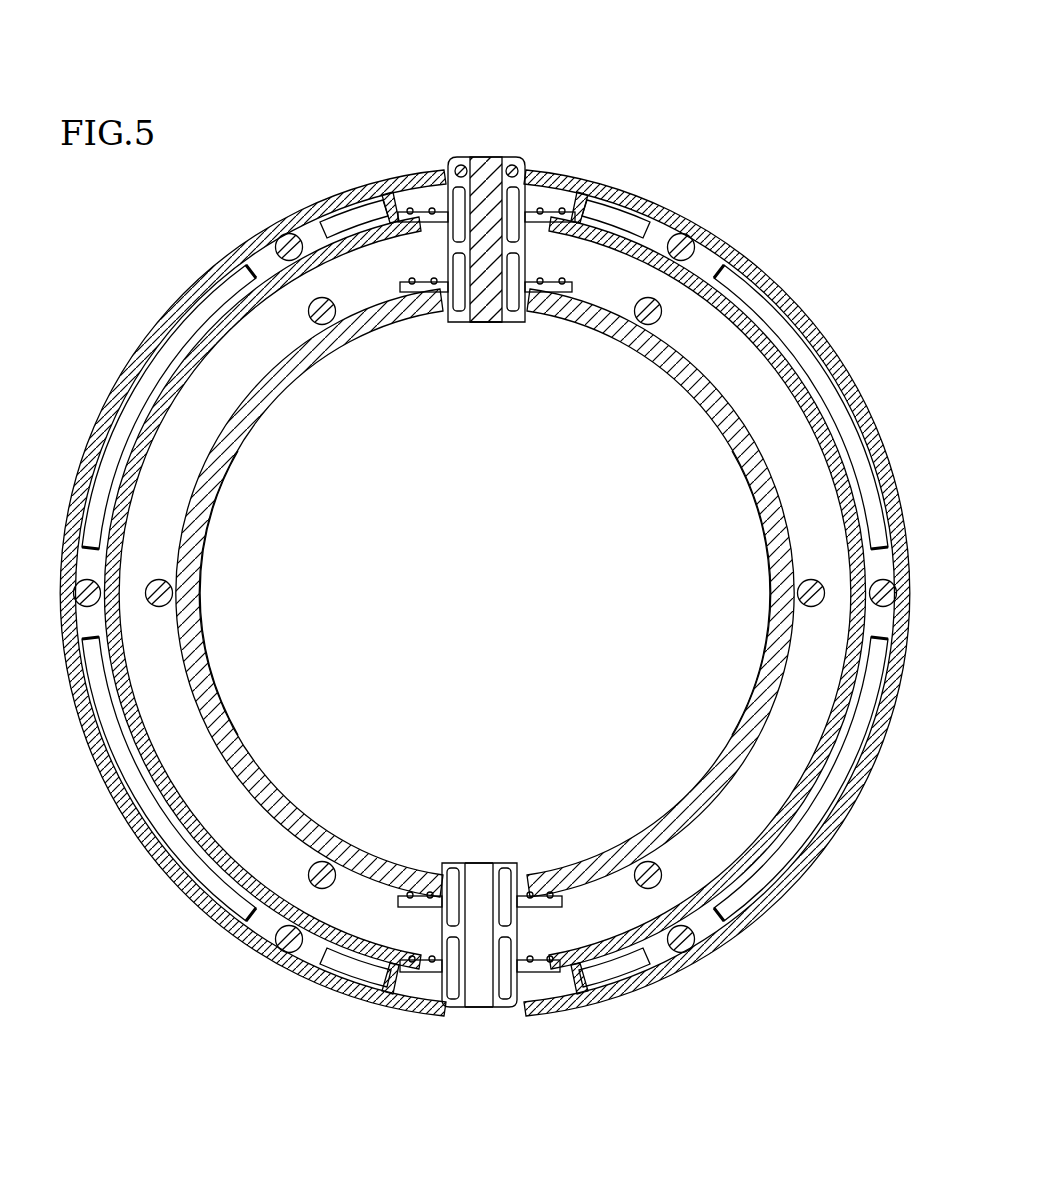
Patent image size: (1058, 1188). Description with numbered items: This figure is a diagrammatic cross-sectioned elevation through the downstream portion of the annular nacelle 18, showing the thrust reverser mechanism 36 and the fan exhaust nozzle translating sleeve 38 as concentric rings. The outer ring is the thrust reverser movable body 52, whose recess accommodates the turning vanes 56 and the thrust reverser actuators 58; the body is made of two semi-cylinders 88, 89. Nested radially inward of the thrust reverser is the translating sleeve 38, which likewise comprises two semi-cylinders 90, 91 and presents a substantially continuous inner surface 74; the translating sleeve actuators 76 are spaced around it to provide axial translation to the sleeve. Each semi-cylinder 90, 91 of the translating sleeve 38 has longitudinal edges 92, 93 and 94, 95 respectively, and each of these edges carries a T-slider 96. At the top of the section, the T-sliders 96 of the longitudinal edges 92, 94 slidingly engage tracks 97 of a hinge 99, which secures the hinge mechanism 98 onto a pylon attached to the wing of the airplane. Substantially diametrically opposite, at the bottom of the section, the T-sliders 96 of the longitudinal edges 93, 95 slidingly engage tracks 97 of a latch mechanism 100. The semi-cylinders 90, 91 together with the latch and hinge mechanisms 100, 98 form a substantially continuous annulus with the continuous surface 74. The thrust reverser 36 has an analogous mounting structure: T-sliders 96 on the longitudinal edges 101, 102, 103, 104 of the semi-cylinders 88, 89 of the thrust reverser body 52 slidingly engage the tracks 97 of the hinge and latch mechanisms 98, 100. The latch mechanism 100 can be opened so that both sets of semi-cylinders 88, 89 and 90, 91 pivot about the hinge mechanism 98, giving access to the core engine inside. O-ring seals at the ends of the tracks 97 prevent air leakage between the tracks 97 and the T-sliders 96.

The annular nacelle 18 is at (471, 597).
The thrust reverser mechanism 36 is at (493, 593).
The fan exhaust nozzle translating sleeve 38 is at (485, 593).
The thrust reverser movable body 52 is at (833, 363).
The turning vanes 56 is at (155, 372).
The thrust reverser actuators 58 is at (684, 246).
The inner surface 74 is at (733, 447).
The translating sleeve actuators 76 is at (318, 313).
The semi-cylinder 88 is at (313, 945).
The semi-cylinder 89 is at (655, 945).
The semi-cylinder 90 is at (212, 553).
The semi-cylinder 91 is at (765, 532).
The longitudinal edge 92 is at (446, 314).
The longitudinal edge 93 is at (438, 868).
The longitudinal edge 94 is at (522, 308).
The longitudinal edge 95 is at (530, 868).
The T-slider 96 is at (518, 166).
The tracks 97 is at (513, 247).
The hinge mechanism 98 is at (493, 568).
The hinge 99 is at (463, 165).
The latch mechanism 100 is at (504, 966).
The longitudinal edge 101 is at (450, 236).
The longitudinal edge 102 is at (432, 975).
The longitudinal edge 103 is at (540, 195).
The longitudinal edge 104 is at (523, 950).